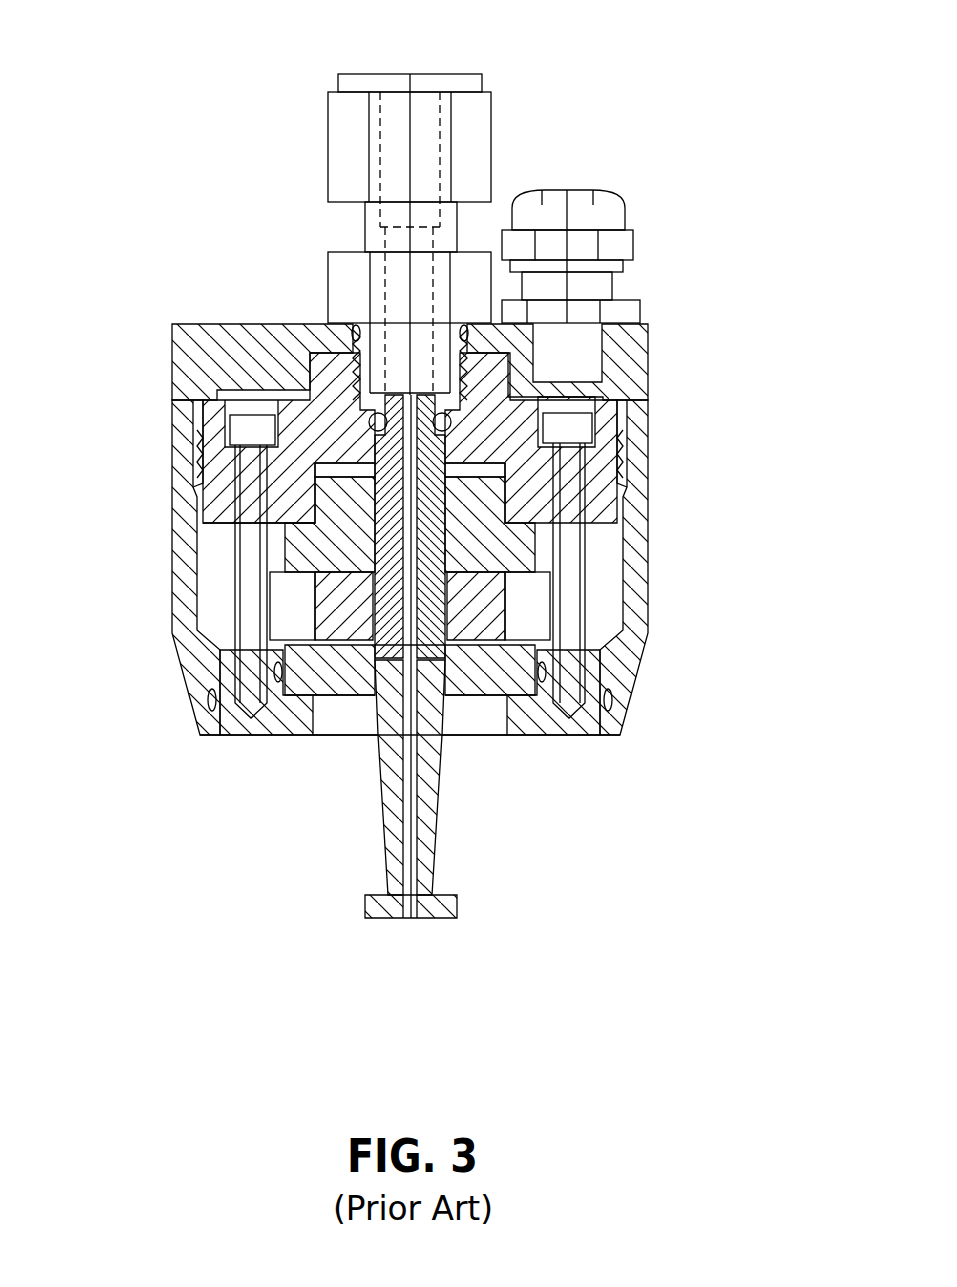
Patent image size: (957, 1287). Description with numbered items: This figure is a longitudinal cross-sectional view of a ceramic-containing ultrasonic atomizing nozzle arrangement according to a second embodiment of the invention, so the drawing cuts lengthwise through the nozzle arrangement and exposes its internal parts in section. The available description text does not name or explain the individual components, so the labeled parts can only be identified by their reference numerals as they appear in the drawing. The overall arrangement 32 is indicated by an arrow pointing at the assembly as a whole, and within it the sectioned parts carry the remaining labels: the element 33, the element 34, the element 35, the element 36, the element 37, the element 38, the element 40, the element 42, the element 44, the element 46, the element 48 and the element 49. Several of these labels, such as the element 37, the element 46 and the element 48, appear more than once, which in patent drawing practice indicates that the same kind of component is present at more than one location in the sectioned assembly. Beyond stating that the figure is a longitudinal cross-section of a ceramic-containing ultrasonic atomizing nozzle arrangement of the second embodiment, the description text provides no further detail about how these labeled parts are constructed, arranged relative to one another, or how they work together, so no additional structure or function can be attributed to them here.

The valve assembly 32 is at (189, 104).
The housing chamber 33 is at (285, 550).
The adjusting rod and nut 34 is at (327, 252).
The top cap plate 35 is at (240, 325).
The piston body 36 is at (533, 553).
The O-ring seals 37 is at (470, 325).
The valve stem 38 is at (380, 763).
The bottom retaining blocks 40 is at (203, 623).
The stem flange 42 is at (394, 920).
The bottom plate 44 is at (460, 733).
The housing body 46 is at (648, 492).
The cap screws 48 is at (228, 415).
The fluid cavity 49 is at (507, 610).